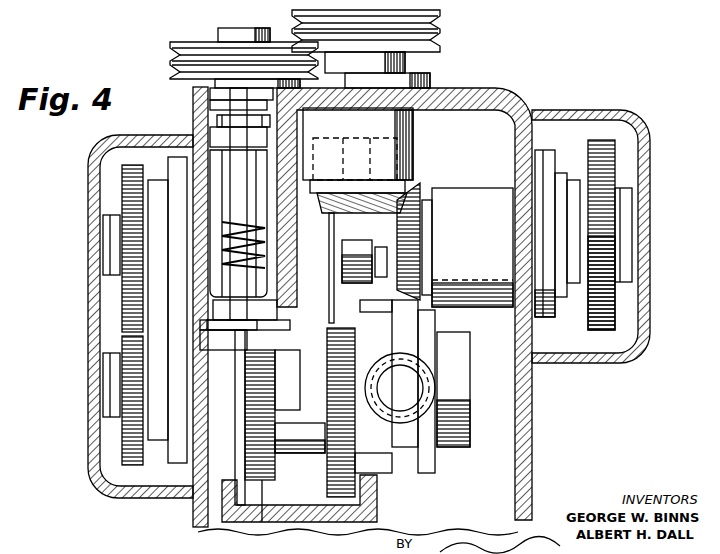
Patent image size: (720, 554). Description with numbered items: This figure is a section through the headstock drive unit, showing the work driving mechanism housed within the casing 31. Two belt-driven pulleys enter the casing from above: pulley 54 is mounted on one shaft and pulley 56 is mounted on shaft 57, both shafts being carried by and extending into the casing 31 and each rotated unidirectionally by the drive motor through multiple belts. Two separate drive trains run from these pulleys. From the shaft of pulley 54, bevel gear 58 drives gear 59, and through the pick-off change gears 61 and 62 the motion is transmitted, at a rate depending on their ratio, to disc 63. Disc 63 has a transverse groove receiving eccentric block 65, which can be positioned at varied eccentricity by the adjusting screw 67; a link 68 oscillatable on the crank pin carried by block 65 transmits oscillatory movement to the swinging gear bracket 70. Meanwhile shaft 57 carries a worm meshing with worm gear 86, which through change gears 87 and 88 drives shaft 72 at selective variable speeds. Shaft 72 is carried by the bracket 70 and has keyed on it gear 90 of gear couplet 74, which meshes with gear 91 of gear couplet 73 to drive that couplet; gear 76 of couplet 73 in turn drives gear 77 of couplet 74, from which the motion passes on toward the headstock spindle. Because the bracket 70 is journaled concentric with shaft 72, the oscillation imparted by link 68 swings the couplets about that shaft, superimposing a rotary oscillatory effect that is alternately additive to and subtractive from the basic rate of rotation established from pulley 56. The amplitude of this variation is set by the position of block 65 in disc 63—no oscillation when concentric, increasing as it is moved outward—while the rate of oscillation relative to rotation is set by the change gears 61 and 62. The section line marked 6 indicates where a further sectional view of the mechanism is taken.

The section line 6 is at (234, 5).
The casing 31 is at (525, 410).
The pulley 54 is at (440, 30).
The pulley 56 is at (170, 55).
The shaft 57 is at (242, 170).
The bevel gear 58 is at (415, 222).
The gear 59 is at (405, 246).
The change gear 61 is at (612, 312).
The change gear 62 is at (612, 163).
The disc 63 is at (357, 271).
The eccentric block 65 is at (378, 150).
The adjusting screw 67 is at (385, 272).
The link 68 is at (329, 258).
The swinging gear bracket 70 is at (380, 497).
The shaft 72 is at (103, 388).
The gear couplet 73 is at (245, 430).
The gear couplet 74 is at (245, 382).
The gear 76 is at (370, 470).
The gear 77 is at (327, 382).
The worm gear 86 is at (225, 222).
The change gear 87 is at (103, 245).
The change gear 88 is at (125, 430).
The gear 90 is at (247, 366).
The gear 91 is at (262, 522).